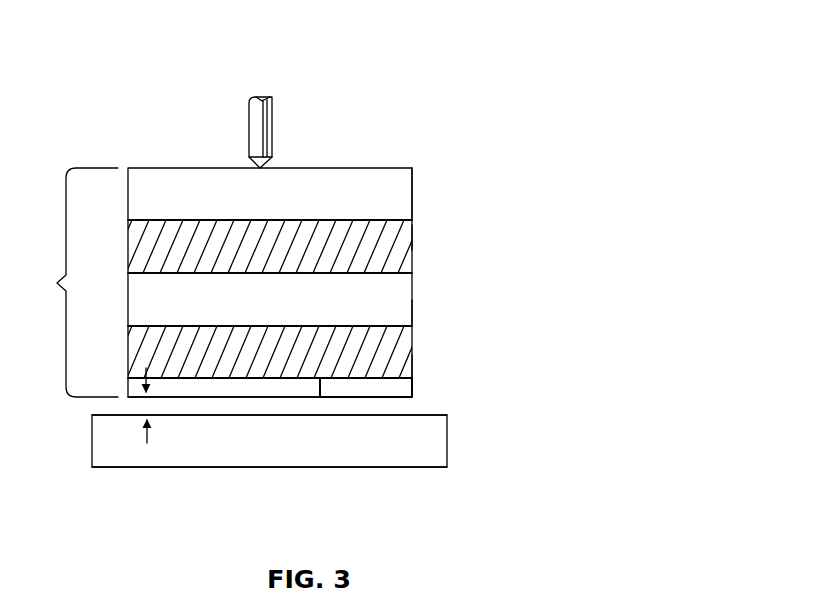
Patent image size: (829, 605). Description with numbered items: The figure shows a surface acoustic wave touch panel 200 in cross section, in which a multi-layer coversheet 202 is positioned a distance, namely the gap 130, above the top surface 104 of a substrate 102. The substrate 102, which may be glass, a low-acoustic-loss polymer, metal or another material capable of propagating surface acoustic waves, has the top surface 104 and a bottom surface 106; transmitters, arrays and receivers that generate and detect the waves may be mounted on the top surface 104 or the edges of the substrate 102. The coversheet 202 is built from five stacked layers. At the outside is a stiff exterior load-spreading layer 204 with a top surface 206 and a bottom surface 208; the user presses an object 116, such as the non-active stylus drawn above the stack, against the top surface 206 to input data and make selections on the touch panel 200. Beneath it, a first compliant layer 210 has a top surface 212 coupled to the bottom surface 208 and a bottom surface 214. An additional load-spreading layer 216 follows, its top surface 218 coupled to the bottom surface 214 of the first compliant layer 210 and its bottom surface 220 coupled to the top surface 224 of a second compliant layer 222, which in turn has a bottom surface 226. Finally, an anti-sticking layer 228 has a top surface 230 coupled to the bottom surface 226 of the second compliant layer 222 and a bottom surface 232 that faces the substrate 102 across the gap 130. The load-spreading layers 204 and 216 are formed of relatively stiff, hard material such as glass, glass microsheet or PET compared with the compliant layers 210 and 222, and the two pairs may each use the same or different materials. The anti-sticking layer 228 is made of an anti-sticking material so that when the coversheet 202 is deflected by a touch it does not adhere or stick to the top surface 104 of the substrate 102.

The SAW touch panel 200 is at (453, 60).
The object 116 is at (249, 130).
The multi-layer coversheet 202 is at (325, 312).
The top surface of load-spreading layer 206 is at (397, 168).
The exterior load-spreading layer 204 is at (412, 195).
The bottom surface of load-spreading layer 208 is at (412, 208).
The first compliant layer 210 is at (412, 256).
The top surface of first compliant layer 212 is at (412, 237).
The bottom surface of first compliant layer 214 is at (412, 265).
The top surface of additional load-spreading layer 218 is at (412, 290).
The additional load-spreading layer 216 is at (412, 313).
The bottom surface of additional load-spreading layer 220 is at (412, 323).
The top surface of second compliant layer 224 is at (412, 345).
The second compliant layer 222 is at (412, 368).
The bottom surface of second compliant layer 226 is at (412, 378).
The anti-sticking layer 228 is at (412, 388).
The top surface of anti-sticking layer 230 is at (318, 398).
The bottom surface of anti-sticking layer 232 is at (379, 398).
The substrate 102 is at (447, 440).
The top surface of substrate 104 is at (433, 414).
The bottom surface of substrate 106 is at (427, 467).
The gap 130 is at (143, 432).